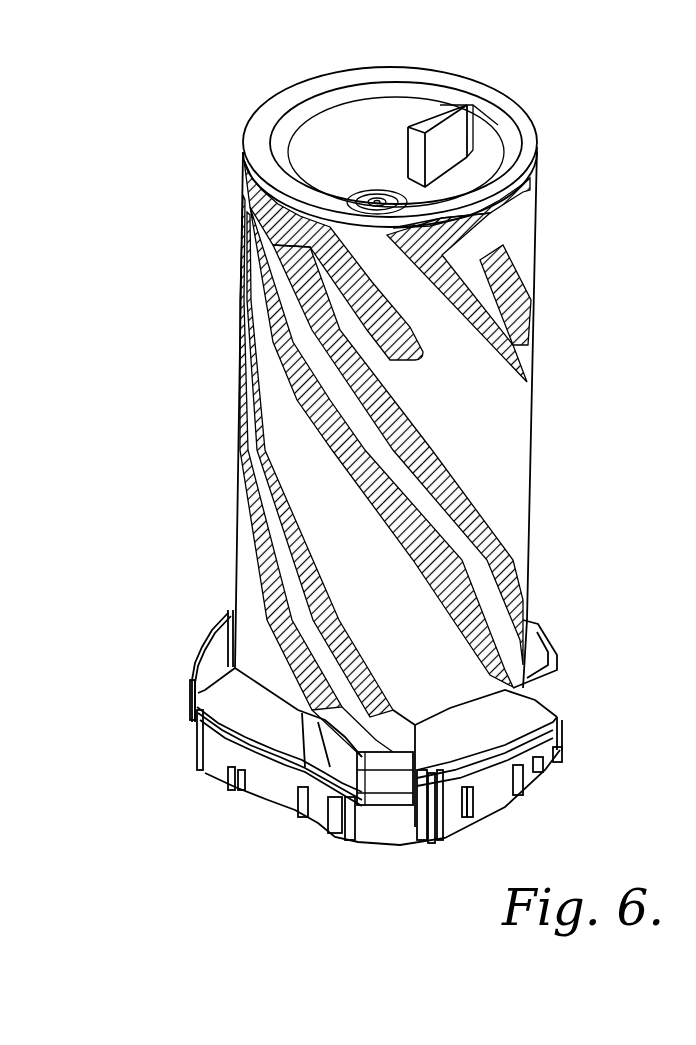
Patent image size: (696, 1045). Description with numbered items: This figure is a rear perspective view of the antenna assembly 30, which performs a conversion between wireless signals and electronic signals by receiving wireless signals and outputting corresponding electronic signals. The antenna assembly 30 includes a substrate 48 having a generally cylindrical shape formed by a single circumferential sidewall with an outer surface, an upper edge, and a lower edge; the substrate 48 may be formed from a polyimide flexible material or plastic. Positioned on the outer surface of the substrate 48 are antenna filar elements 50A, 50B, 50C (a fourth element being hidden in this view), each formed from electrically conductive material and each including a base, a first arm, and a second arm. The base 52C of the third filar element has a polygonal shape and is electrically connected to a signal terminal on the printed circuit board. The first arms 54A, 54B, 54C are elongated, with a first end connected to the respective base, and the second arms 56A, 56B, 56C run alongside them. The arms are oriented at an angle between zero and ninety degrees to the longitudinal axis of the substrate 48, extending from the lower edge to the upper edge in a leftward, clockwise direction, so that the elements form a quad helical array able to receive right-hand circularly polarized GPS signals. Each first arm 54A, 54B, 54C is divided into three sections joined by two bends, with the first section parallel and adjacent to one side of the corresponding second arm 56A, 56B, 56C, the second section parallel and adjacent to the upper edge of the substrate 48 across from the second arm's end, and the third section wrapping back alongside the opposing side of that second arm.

The antenna assembly 30 is at (531, 88).
The substrate 48 is at (285, 98).
The antenna filar element 50A is at (534, 280).
The antenna filar element 50B is at (447, 447).
The antenna filar element 50C is at (244, 476).
The base 52C is at (388, 752).
The first arm 54A is at (497, 343).
The first arm 54B is at (490, 620).
The first arm 54C is at (258, 564).
The second arm 56A is at (523, 290).
The second arm 56B is at (494, 548).
The second arm 56C is at (266, 497).